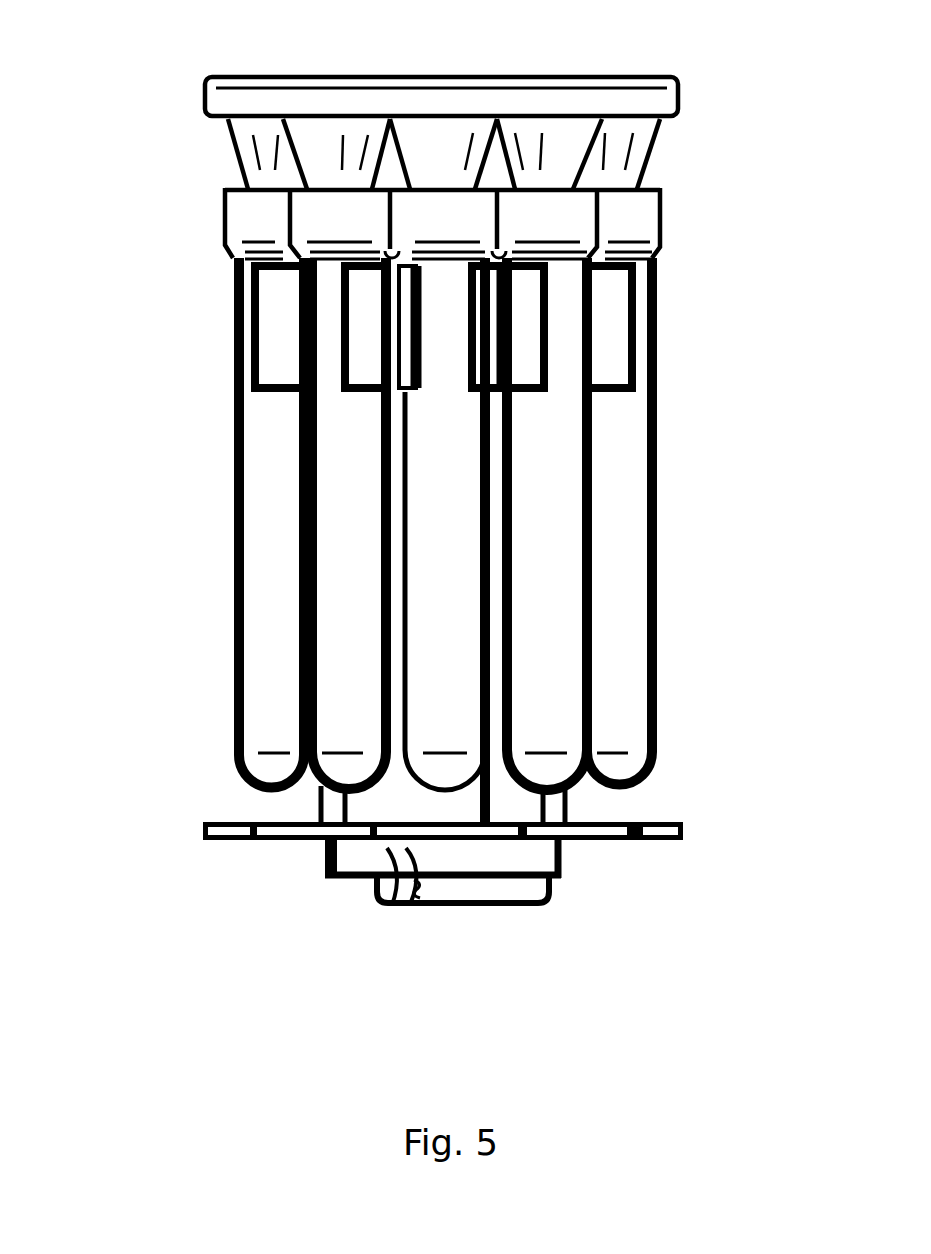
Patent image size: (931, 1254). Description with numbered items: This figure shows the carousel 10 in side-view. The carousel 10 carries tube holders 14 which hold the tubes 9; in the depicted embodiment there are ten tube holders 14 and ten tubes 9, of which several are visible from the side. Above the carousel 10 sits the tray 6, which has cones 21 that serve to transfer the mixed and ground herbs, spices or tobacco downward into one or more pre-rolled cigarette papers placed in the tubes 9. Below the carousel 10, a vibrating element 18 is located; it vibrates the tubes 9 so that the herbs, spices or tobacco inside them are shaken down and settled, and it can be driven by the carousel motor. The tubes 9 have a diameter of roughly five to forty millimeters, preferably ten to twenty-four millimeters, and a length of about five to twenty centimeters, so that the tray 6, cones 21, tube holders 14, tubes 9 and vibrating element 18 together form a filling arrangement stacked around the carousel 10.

The tray 6 is at (490, 74).
The cones 21 is at (618, 160).
The carousel 10 is at (212, 324).
The tube holders 14 is at (612, 330).
The tubes 9 is at (268, 549).
The vibrating element 18 is at (492, 890).